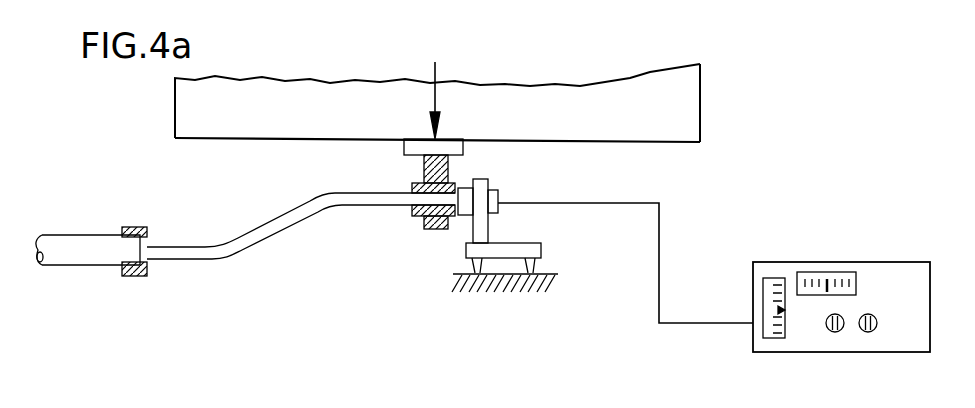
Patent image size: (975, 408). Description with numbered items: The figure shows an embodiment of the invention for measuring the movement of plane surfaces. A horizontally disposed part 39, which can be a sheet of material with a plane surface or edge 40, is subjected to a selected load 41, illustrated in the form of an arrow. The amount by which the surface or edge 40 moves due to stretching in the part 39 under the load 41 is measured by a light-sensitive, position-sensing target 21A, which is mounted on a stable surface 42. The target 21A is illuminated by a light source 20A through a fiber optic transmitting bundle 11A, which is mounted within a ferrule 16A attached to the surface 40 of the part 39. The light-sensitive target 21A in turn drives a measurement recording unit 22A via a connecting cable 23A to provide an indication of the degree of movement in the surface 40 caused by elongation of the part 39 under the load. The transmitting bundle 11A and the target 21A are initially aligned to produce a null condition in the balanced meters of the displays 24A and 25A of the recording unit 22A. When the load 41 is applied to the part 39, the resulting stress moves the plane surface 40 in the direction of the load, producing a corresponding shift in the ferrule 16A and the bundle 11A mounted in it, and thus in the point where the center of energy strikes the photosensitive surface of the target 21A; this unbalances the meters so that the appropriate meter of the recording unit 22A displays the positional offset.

The part 39 is at (700, 82).
The plane surface or edge 40 is at (683, 143).
The load 41 is at (434, 67).
The ferrule 16A is at (412, 186).
The fiber optic transmitting bundle 11A is at (296, 219).
The light source 20A is at (55, 235).
The light-sensitive position-sensing target 21A is at (463, 180).
The stable surface 42 is at (549, 273).
The connecting cable 23A is at (593, 203).
The measurement recording unit 22A is at (865, 352).
The display 24A is at (857, 283).
The display 25A is at (786, 312).